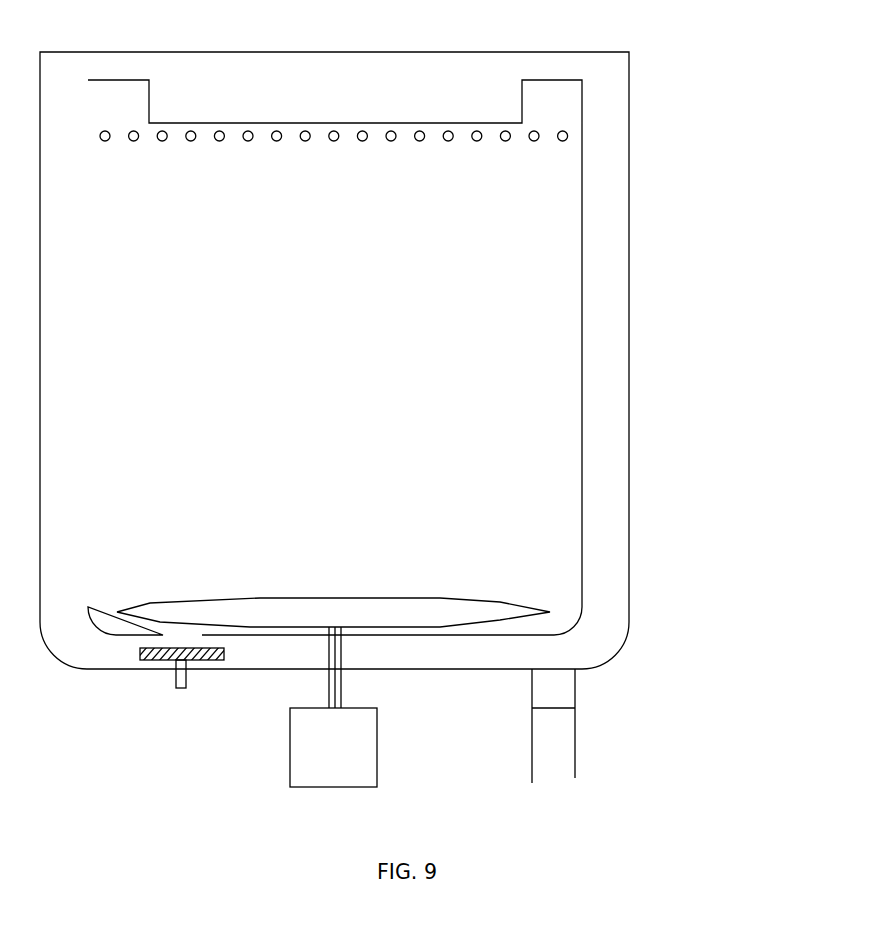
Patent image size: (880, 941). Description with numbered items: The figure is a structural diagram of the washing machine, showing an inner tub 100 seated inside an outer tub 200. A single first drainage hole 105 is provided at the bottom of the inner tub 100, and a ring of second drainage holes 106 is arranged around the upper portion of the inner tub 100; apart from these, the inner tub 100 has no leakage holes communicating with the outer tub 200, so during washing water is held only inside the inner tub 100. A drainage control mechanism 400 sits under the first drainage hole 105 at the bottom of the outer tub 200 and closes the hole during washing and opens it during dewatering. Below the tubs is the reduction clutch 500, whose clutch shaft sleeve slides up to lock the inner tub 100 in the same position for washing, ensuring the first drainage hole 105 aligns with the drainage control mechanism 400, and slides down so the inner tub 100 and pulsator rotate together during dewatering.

The inner tub 100 is at (628, 183).
The outer tub 200 is at (577, 380).
The second drainage hole 106 is at (508, 136).
The first drainage hole 105 is at (178, 632).
The drainage control mechanism 400 is at (193, 660).
The reduction clutch 500 is at (338, 747).